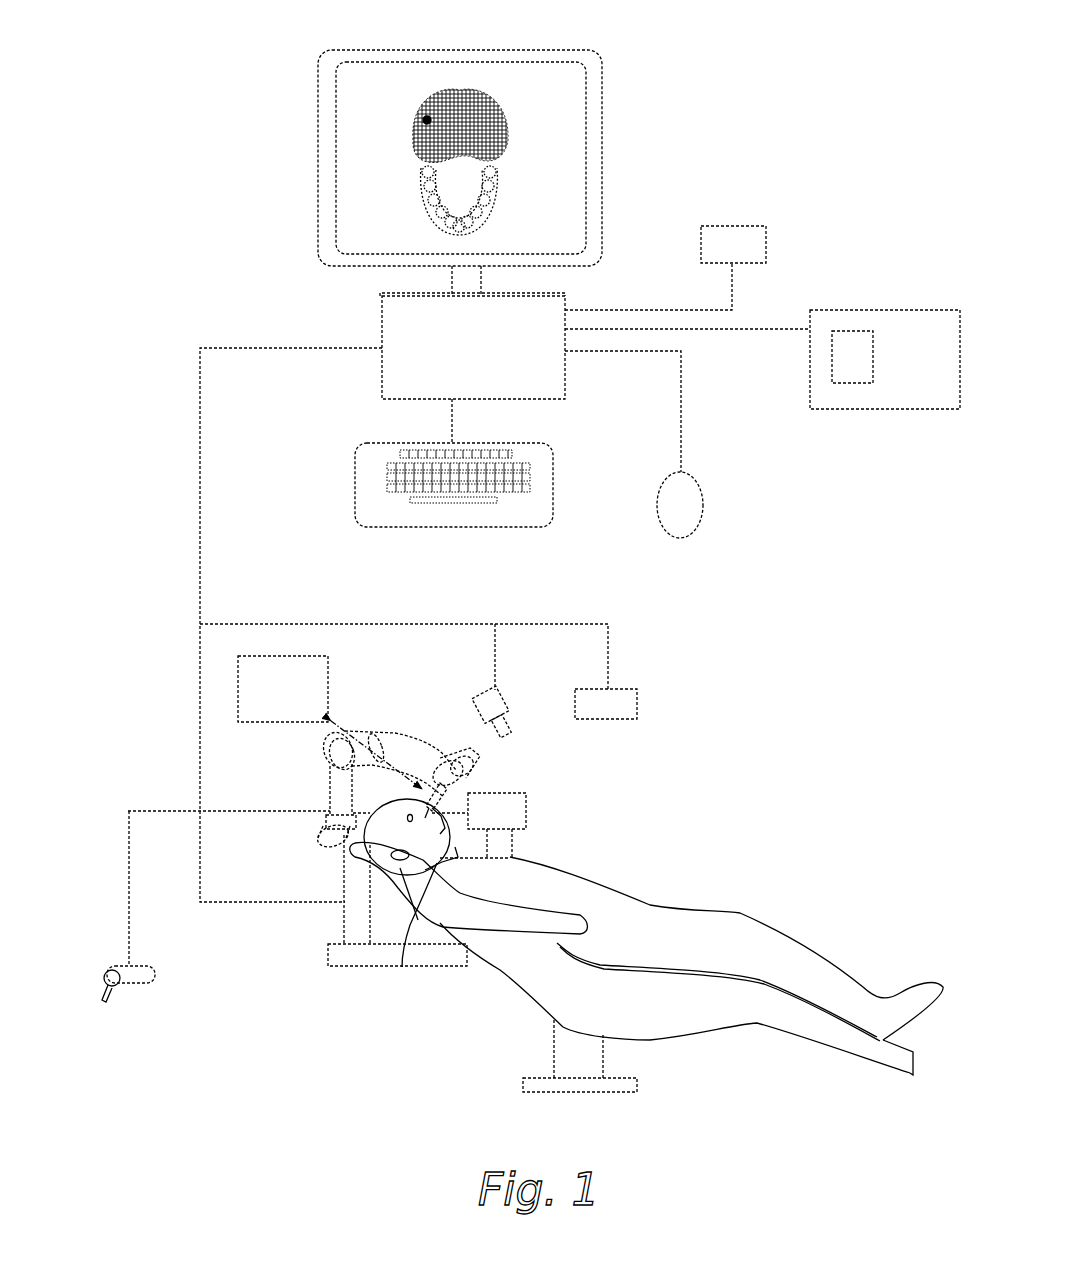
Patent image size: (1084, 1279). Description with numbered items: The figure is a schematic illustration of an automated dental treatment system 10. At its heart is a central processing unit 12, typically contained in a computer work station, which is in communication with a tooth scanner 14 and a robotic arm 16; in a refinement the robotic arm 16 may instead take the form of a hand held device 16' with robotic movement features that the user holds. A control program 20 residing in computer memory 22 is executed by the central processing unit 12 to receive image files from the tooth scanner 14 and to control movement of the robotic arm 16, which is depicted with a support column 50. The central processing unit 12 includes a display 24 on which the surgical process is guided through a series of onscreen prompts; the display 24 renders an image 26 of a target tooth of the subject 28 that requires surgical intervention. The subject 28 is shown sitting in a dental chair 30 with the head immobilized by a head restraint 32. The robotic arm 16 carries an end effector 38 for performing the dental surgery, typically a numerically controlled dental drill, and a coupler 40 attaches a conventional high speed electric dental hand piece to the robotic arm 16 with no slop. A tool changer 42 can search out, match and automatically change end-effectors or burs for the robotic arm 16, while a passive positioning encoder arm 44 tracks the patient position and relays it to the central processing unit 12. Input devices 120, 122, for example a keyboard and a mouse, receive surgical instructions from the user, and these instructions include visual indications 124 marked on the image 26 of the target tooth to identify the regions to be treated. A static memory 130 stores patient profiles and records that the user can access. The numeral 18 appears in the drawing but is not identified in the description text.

The dental treatment system 10 is at (742, 174).
The central processing unit 12 is at (473, 347).
The tooth scanner 14 is at (465, 691).
The robotic arm 16 is at (363, 789).
The hand held device 16' is at (166, 1000).
The camera / tracking sensor 18 is at (494, 703).
The control program 20 is at (852, 357).
The computer memory 22 is at (885, 359).
The display 24 is at (318, 172).
The image 26 is at (427, 120).
The subject 28 is at (587, 887).
The dental chair 30 is at (678, 1014).
The head restraint 32 is at (432, 870).
The end effector 38 is at (403, 773).
The coupler 40 is at (466, 772).
The tool changer 42 is at (283, 689).
The passive positioning encoder arm 44 is at (512, 802).
The support column 50 is at (610, 705).
The input device 120 is at (545, 527).
The input device 122 is at (698, 515).
The visual indications 124 is at (427, 118).
The static memory 130 is at (766, 243).